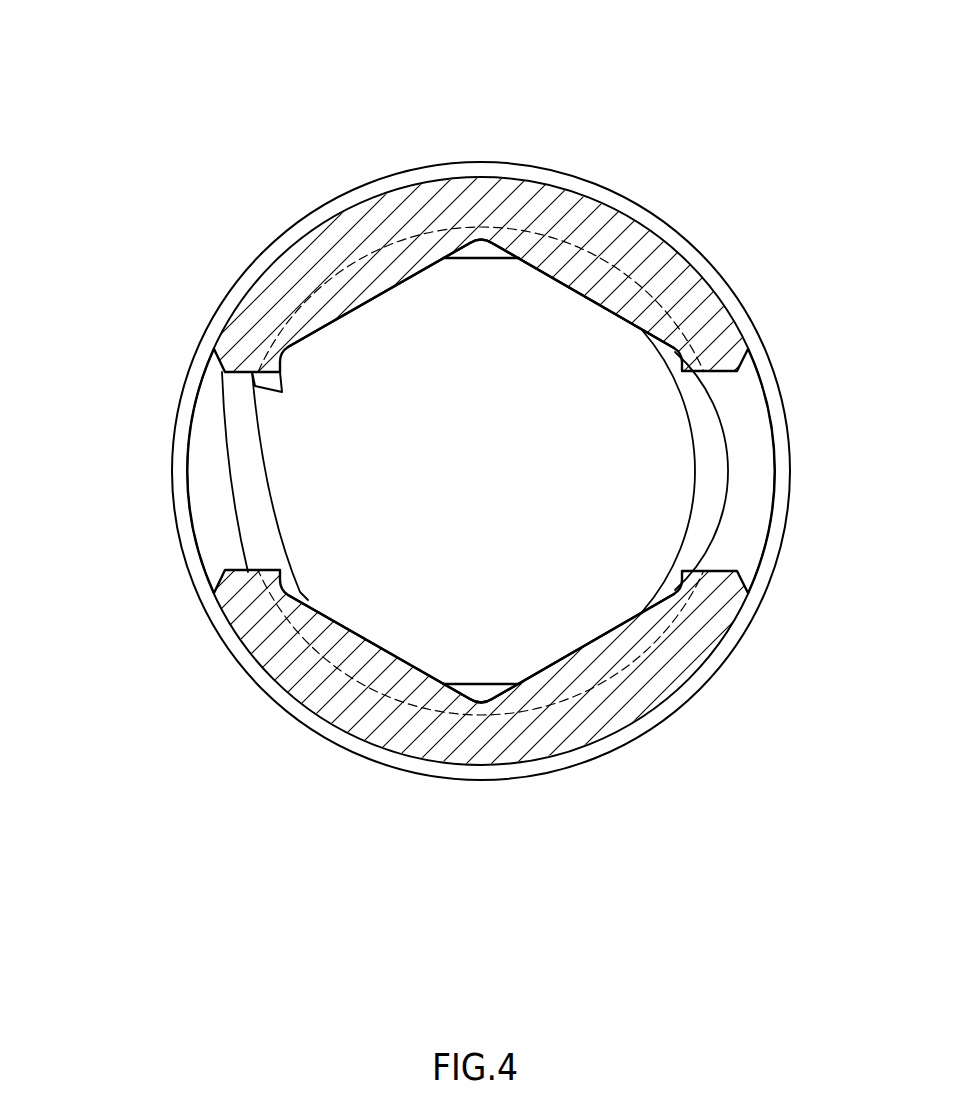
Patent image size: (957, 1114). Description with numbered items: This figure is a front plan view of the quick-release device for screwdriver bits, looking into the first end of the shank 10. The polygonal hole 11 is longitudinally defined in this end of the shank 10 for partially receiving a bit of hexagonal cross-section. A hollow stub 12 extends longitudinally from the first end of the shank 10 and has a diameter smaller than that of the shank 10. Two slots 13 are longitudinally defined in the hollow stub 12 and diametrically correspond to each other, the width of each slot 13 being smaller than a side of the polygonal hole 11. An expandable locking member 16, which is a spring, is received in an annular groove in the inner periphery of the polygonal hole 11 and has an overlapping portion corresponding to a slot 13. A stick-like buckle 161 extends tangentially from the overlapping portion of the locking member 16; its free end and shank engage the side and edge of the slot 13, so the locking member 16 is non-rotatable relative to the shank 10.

The shank 10 is at (630, 195).
The polygonal hole 11 is at (407, 280).
The hollow stub 12 is at (485, 197).
The slot 13 is at (743, 512).
The locking member 16 is at (710, 440).
The buckle 161 is at (243, 385).